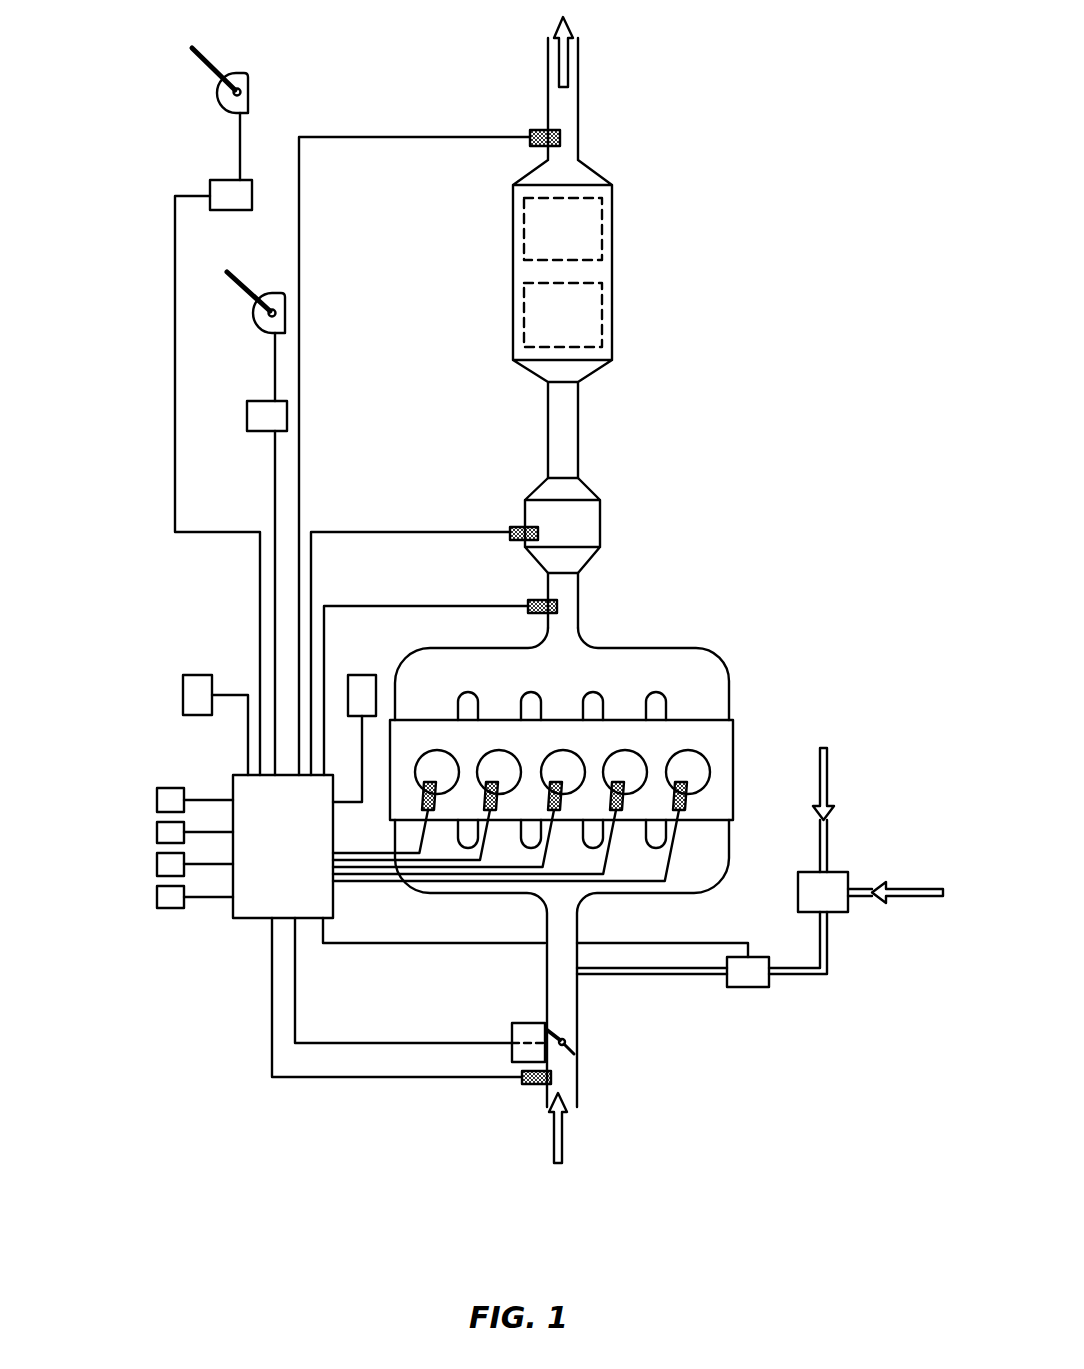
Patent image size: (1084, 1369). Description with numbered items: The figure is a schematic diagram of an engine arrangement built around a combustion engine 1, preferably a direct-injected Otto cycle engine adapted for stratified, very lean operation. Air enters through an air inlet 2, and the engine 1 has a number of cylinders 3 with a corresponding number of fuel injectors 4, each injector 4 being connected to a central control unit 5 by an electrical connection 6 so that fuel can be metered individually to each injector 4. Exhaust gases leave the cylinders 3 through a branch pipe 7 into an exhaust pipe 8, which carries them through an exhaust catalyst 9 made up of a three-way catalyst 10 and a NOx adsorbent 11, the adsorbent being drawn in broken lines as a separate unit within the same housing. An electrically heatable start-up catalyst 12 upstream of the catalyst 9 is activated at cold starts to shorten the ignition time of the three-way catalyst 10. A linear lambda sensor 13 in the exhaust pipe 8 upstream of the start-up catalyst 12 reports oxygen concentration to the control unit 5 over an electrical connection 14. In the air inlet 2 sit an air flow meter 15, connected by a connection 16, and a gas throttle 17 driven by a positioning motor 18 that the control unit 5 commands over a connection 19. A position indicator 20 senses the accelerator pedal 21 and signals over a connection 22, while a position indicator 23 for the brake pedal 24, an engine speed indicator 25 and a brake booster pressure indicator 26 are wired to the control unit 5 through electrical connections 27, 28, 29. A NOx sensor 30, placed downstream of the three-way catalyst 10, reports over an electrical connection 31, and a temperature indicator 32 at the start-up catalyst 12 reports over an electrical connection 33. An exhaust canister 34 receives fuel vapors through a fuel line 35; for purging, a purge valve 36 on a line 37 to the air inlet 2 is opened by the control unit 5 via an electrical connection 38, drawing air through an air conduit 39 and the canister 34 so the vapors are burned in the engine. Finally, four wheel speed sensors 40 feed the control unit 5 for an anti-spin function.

The combustion engine 1 is at (727, 735).
The air inlet 2 is at (567, 953).
The cylinders 3 is at (700, 773).
The fuel injectors 4 is at (689, 799).
The central control unit 5 is at (255, 905).
The electrical connection 6 is at (678, 835).
The branch pipe 7 is at (695, 662).
The exhaust pipe 8 is at (567, 618).
The exhaust catalyst 9 is at (582, 367).
The three-way catalyst 10 is at (605, 230).
The NOx adsorbent 11 is at (605, 320).
The start-up catalyst 12 is at (597, 523).
The sensor 13 is at (533, 600).
The electrical connection 14 is at (440, 604).
The air flow meter 15 is at (528, 1085).
The connection 16 is at (385, 1080).
The gas throttle 17 is at (565, 1032).
The positioning motor 18 is at (515, 1025).
The connection 19 is at (385, 1040).
The position indicator 20 is at (253, 413).
The accelerator pedal 21 is at (255, 298).
The connection 22 is at (273, 468).
The position indicator 23 is at (210, 182).
The brake pedal 24 is at (213, 63).
The engine speed indicator 25 is at (357, 697).
The pressure indicator 26 is at (183, 700).
The electrical connection 27 is at (215, 535).
The electrical connection 28 is at (363, 762).
The electrical connection 29 is at (247, 725).
The NOx sensor 30 is at (535, 128).
The electrical connection 31 is at (430, 134).
The temperature indicator 32 is at (513, 527).
The electrical connection 33 is at (440, 530).
The exhaust canister 34 is at (840, 912).
The fuel line 35 is at (827, 835).
The purge valve 36 is at (748, 988).
The line 37 is at (808, 978).
The electrical connection 38 is at (655, 942).
The air conduit 39 is at (862, 888).
The sensors 40 is at (157, 897).